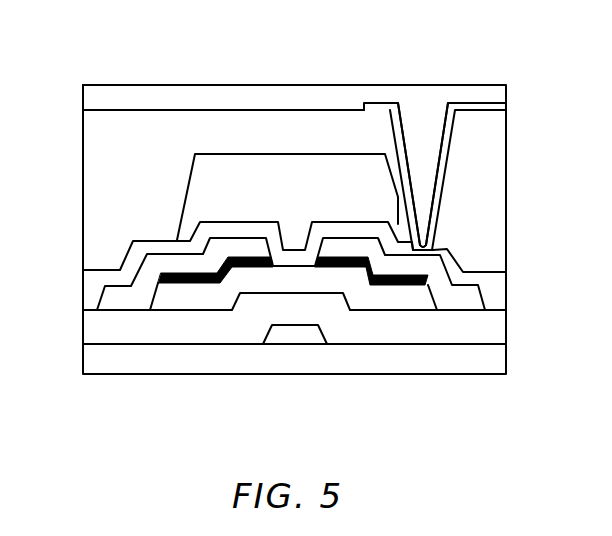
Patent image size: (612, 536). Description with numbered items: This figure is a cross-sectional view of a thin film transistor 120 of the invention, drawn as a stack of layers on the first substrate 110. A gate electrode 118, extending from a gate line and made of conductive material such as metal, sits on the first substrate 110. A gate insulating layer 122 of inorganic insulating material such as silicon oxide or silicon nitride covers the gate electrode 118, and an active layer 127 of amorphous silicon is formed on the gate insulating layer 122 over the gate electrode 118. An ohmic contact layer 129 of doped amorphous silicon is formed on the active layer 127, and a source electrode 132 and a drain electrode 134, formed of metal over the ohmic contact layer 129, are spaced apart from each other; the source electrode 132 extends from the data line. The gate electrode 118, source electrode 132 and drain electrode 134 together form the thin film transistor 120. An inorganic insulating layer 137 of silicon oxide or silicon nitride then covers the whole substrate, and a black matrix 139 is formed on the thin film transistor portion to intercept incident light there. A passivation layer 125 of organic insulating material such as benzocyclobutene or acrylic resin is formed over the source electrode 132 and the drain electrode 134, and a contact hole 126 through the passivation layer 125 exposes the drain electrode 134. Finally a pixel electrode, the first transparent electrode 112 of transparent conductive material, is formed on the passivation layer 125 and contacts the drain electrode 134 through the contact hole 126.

The first substrate 110 is at (294, 358).
The first transparent electrode 112 is at (488, 106).
The gate electrode 118 is at (282, 335).
The thin film transistor 120 is at (82, 222).
The gate insulating layer 122 is at (488, 327).
The passivation layer 125 is at (488, 158).
The contact hole 126 is at (424, 116).
The active layer 127 is at (193, 298).
The ohmic contact layer 129 is at (166, 285).
The source electrode 132 is at (120, 298).
The drain electrode 134 is at (474, 302).
The inorganic insulating layer 137 is at (148, 244).
The black matrix 139 is at (248, 170).